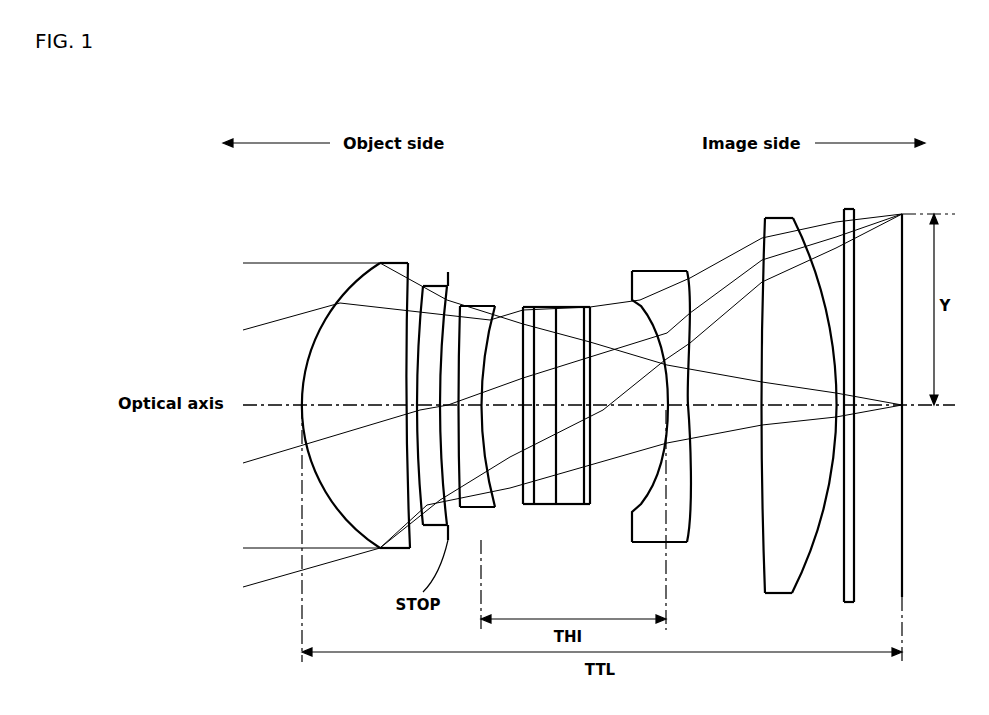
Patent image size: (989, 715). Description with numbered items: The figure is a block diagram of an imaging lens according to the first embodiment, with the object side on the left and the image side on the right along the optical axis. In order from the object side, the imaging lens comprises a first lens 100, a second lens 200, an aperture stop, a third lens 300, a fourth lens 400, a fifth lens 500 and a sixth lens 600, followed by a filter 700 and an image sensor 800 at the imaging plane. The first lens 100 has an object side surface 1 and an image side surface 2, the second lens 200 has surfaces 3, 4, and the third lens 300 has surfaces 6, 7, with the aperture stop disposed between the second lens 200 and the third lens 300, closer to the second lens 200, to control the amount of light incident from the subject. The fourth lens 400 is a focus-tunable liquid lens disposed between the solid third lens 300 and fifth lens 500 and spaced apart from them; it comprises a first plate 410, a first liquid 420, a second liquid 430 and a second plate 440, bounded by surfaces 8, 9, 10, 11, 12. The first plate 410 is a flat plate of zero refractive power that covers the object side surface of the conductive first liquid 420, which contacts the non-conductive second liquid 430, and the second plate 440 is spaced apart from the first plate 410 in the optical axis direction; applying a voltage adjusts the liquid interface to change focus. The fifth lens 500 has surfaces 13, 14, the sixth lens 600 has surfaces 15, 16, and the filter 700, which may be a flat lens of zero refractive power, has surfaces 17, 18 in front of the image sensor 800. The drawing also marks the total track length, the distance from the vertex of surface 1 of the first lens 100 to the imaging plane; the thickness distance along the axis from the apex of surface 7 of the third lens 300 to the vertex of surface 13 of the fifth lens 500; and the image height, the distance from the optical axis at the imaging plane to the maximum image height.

The object-side surface of first lens 1 is at (345, 292).
The image-side surface of first lens 2 is at (406, 282).
The object-side surface of second lens 3 is at (422, 290).
The image-side surface of second lens 4 is at (441, 292).
The object-side surface of third lens 6 is at (462, 302).
The image-side surface of third lens 7 is at (484, 357).
The object-side surface of fourth lens element 8 is at (524, 308).
The surface between first and second elements of fourth lens 9 is at (533, 318).
The surface between second and third elements of fourth lens 10 is at (555, 322).
The surface between third and fourth elements of fourth lens 11 is at (582, 320).
The image-side surface of fourth lens element 12 is at (592, 330).
The object-side surface of fifth lens 13 is at (645, 305).
The image-side surface of fifth lens 14 is at (690, 277).
The object-side surface of sixth lens 15 is at (762, 232).
The image-side surface of sixth lens 16 is at (798, 235).
The object-side surface of filter 17 is at (843, 210).
The image-side surface of filter 18 is at (857, 210).
The first lens 100 is at (324, 389).
The second lens 200 is at (394, 415).
The third lens 300 is at (474, 421).
The fourth lens 400 is at (561, 431).
The first plate 410 is at (510, 418).
The first liquid 420 is at (542, 412).
The second liquid 430 is at (577, 415).
The second plate 440 is at (611, 437).
The fifth lens 500 is at (679, 396).
The sixth lens 600 is at (781, 412).
The filter 700 is at (844, 406).
The image sensor 800 is at (903, 575).